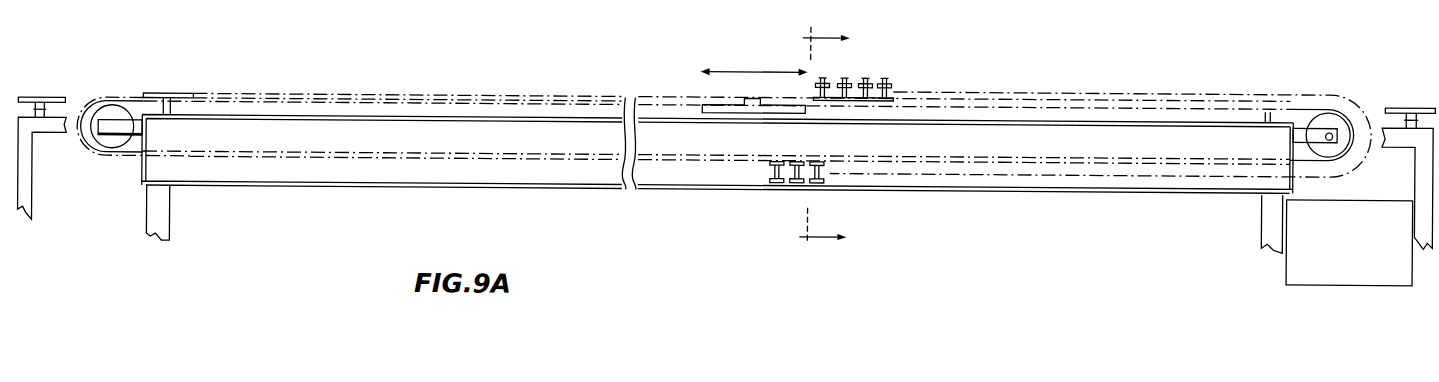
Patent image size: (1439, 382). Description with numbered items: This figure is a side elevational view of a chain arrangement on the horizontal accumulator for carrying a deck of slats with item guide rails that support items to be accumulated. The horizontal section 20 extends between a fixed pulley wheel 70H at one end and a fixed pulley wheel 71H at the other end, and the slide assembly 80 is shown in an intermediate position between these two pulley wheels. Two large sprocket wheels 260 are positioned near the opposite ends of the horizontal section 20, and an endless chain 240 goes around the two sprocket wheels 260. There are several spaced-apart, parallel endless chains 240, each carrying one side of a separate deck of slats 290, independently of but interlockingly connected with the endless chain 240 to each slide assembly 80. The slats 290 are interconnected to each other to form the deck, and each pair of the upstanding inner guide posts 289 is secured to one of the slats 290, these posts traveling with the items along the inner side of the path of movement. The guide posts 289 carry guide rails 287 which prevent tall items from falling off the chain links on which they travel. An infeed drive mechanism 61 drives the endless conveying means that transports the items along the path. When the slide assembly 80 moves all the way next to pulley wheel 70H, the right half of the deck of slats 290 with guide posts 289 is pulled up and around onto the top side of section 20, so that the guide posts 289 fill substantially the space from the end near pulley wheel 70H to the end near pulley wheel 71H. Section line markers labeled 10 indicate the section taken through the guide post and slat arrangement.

The fixed pulley wheel 70H is at (32, 97).
The fixed pulley wheel 71H is at (1400, 99).
The horizontal section 20 is at (27, 192).
The endless chain 240 is at (132, 97).
The sprocket wheel 260 is at (105, 112).
The slide assembly 80 is at (753, 94).
The guide rail 287 is at (897, 84).
The inner guide post 289 is at (890, 82).
The slat 290 is at (900, 92).
The infeed drive mechanism 61 is at (1360, 234).
The section line 10- 10 is at (841, 138).